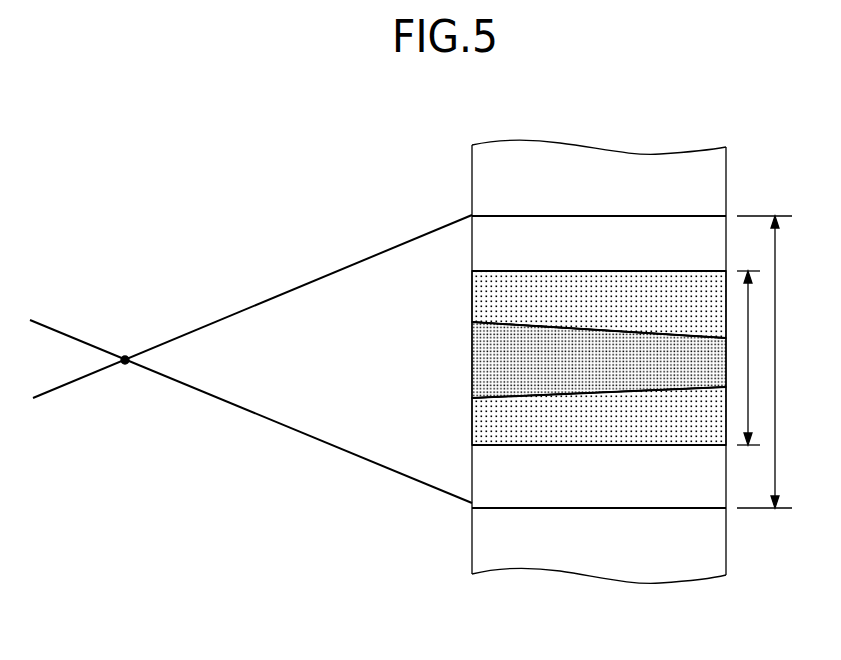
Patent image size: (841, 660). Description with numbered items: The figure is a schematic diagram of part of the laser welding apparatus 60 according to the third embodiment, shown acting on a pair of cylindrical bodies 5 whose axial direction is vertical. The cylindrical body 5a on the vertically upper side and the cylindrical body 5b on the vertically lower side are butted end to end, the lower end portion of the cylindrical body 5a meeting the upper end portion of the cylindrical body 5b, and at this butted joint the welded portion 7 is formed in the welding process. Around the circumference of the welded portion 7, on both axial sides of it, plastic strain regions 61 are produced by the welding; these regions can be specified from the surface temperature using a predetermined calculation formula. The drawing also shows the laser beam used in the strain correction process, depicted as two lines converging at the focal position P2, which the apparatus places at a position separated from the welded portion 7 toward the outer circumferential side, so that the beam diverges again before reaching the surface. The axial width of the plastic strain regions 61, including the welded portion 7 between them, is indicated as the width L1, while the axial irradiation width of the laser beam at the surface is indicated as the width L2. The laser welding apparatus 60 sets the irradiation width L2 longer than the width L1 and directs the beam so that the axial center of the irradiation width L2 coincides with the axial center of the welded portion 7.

The laser welding apparatus 60 is at (163, 216).
The focal position P2 is at (125, 356).
The cylindrical body 5 is at (559, 363).
The cylindrical body of vertically upper side 5a is at (472, 184).
The cylindrical body of vertically lower side 5b is at (472, 540).
The plastic strain region 61 is at (472, 290).
The welded portion 7 is at (472, 362).
The axial width of plastic strain region L1 is at (748, 313).
The axial irradiation width of laser beam L2 is at (776, 351).